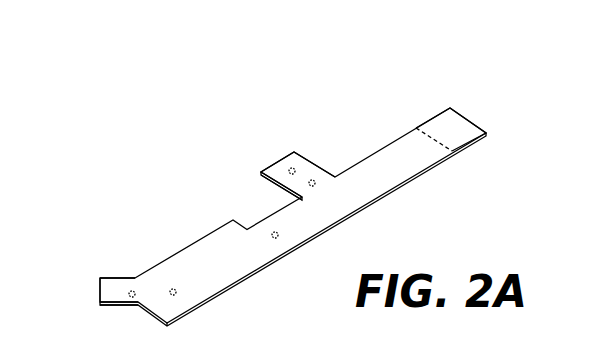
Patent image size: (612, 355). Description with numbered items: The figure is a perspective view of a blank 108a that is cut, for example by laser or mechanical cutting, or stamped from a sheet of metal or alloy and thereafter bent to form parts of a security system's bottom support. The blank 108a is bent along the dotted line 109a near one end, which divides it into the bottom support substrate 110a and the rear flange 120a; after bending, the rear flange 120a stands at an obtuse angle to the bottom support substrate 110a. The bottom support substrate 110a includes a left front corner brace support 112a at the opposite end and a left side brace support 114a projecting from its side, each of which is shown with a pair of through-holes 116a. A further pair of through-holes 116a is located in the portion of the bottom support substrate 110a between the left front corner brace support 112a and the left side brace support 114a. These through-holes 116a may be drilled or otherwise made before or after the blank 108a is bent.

The blank 108a is at (143, 161).
The bottom support substrate 110a is at (285, 223).
The left front corner brace support 112a is at (110, 287).
The left side brace support 114a is at (281, 165).
The through-holes 116a is at (132, 291).
The dotted line 109a is at (433, 130).
The rear flange 120a is at (457, 128).